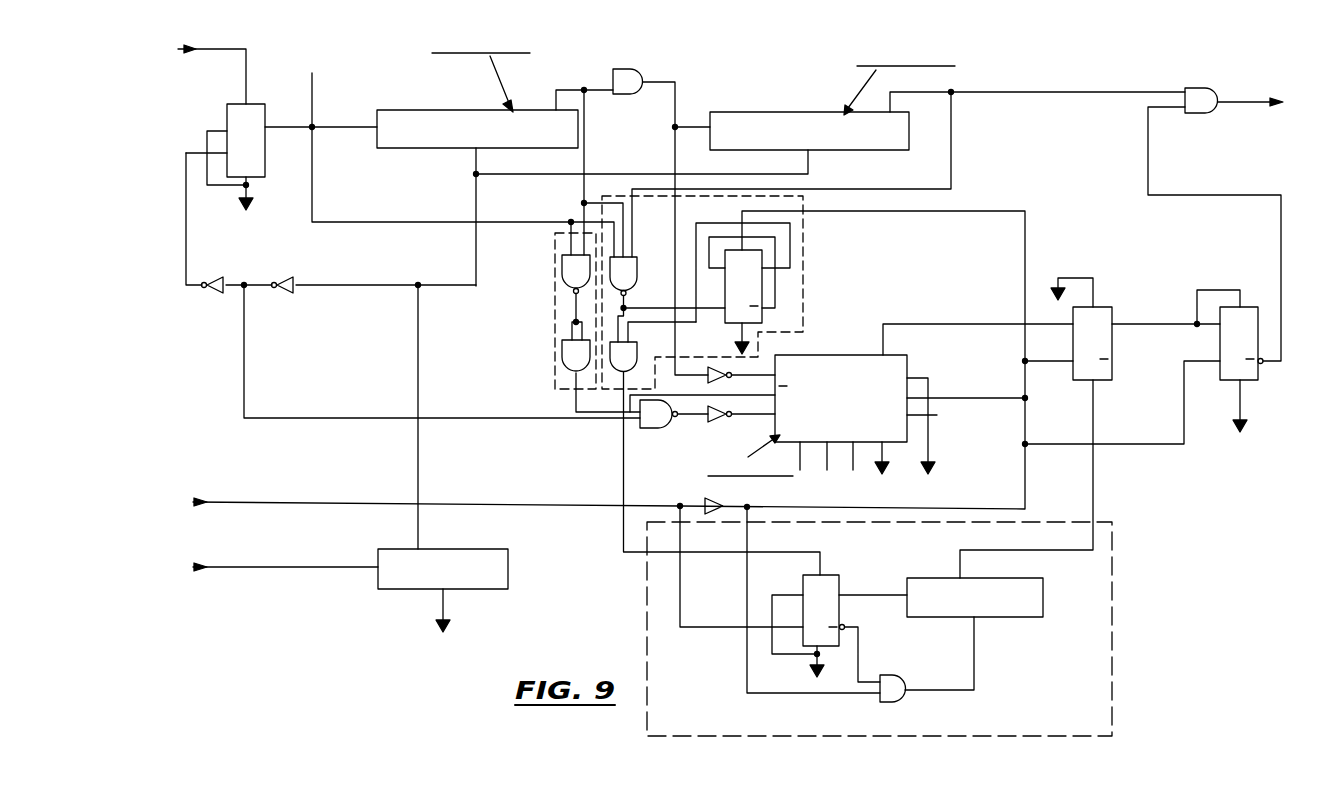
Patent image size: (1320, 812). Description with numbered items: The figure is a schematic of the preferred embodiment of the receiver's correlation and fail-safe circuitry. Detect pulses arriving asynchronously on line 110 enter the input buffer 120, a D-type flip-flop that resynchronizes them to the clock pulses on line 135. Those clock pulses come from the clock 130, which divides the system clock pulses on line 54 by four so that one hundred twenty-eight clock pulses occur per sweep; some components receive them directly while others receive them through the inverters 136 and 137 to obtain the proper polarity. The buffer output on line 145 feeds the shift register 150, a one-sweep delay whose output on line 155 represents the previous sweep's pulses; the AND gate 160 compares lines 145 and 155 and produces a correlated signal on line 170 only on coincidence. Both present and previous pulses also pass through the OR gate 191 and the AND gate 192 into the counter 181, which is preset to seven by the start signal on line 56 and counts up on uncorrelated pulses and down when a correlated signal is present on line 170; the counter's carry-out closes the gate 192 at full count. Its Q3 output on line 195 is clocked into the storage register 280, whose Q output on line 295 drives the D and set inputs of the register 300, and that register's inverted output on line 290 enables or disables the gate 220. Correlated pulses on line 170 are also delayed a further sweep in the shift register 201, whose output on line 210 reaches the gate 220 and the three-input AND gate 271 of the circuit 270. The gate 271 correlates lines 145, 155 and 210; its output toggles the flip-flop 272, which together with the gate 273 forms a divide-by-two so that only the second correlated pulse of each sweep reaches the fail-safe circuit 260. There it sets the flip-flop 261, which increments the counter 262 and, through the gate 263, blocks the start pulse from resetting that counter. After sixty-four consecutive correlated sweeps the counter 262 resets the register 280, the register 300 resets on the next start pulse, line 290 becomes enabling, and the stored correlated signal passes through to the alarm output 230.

The system clock line 54 is at (270, 562).
The start signal line 56 is at (1026, 484).
The detect pulse line 110 is at (218, 51).
The input buffer 120 is at (227, 105).
The clock 130 is at (484, 590).
The clock pulse line 135 is at (418, 382).
The inverter 136 is at (288, 294).
The inverter 137 is at (215, 294).
The input buffer output line 145 is at (330, 129).
The shift register 150 is at (461, 110).
The shift register output line 155 is at (586, 124).
The AND gate 160 is at (620, 69).
The correlated output line 170 is at (667, 82).
The counter 181 is at (827, 355).
The OR gate 191 is at (555, 314).
The AND gate 192 is at (656, 430).
The counter output line 195 is at (946, 324).
The shift register 201 is at (810, 112).
The shift register output line 210 is at (1052, 92).
The AND gate 220 is at (1203, 113).
The AND gate output line 230 is at (1238, 104).
The fail-safe circuit 260 is at (1112, 714).
The flip-flop 261 is at (838, 576).
The counter 262 is at (1040, 617).
The AND gate 263 is at (905, 701).
The correlation circuit 270 is at (806, 297).
The AND gate 271 is at (636, 268).
The flip-flop 272 is at (778, 281).
The gate 273 is at (637, 346).
The storage register 280 is at (1080, 380).
The enabling line 290 is at (1281, 251).
The register output line 295 is at (1168, 304).
The register 300 is at (1244, 383).